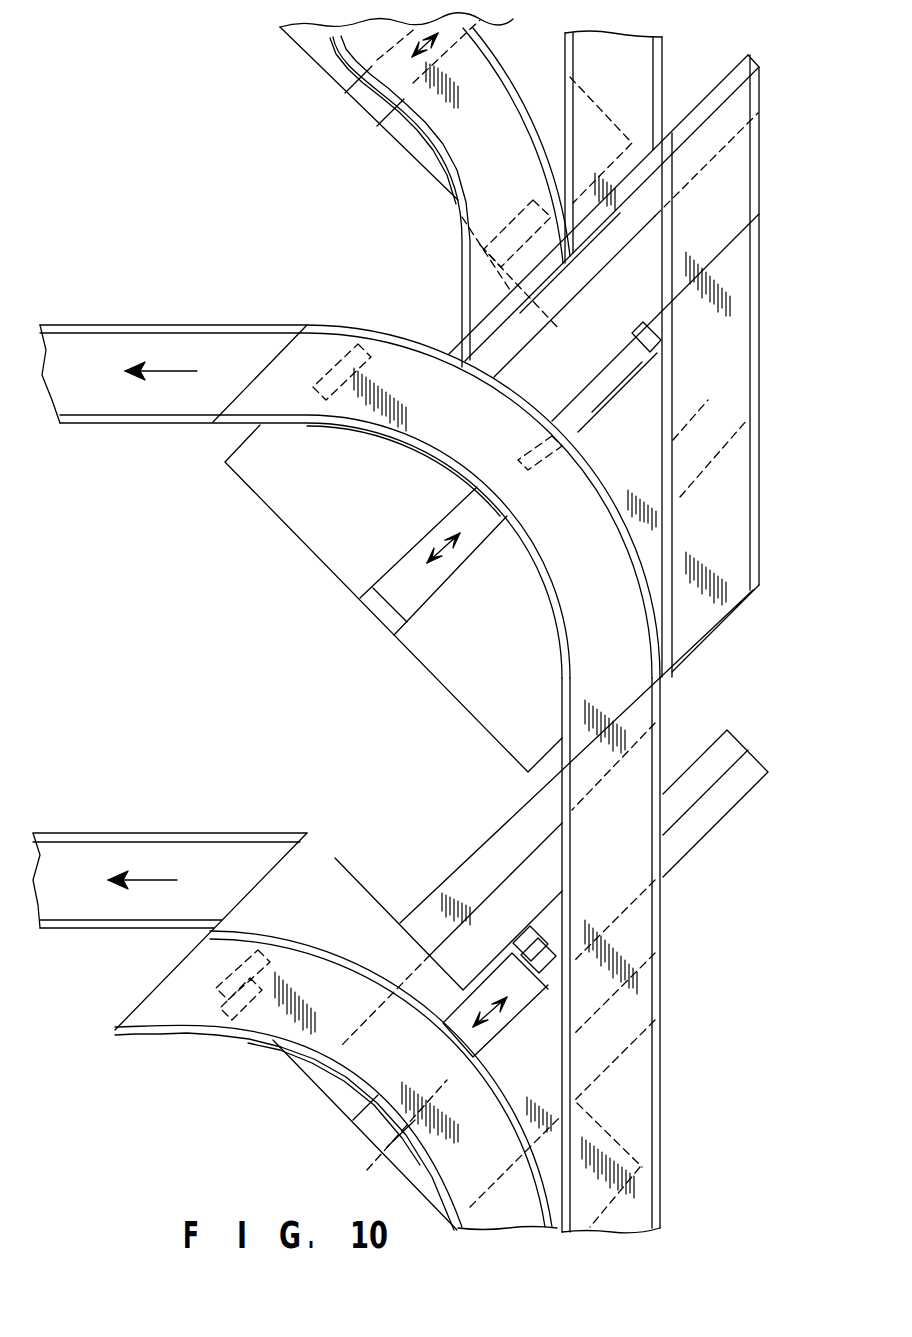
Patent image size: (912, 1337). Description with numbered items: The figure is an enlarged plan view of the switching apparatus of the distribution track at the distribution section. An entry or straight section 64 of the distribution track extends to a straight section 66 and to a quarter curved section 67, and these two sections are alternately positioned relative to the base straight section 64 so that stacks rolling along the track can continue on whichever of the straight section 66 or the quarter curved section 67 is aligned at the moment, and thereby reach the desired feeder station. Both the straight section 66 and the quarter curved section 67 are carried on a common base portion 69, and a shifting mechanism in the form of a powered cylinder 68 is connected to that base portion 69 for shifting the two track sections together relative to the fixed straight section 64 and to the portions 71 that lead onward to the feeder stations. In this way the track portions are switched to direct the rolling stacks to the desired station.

The straight section 64 is at (657, 88).
The straight section 66 is at (758, 565).
The quarter curved section 67 is at (357, 427).
The powered cylinder 68 is at (500, 978).
The base portion 69 is at (377, 893).
The portions 71 is at (237, 325).